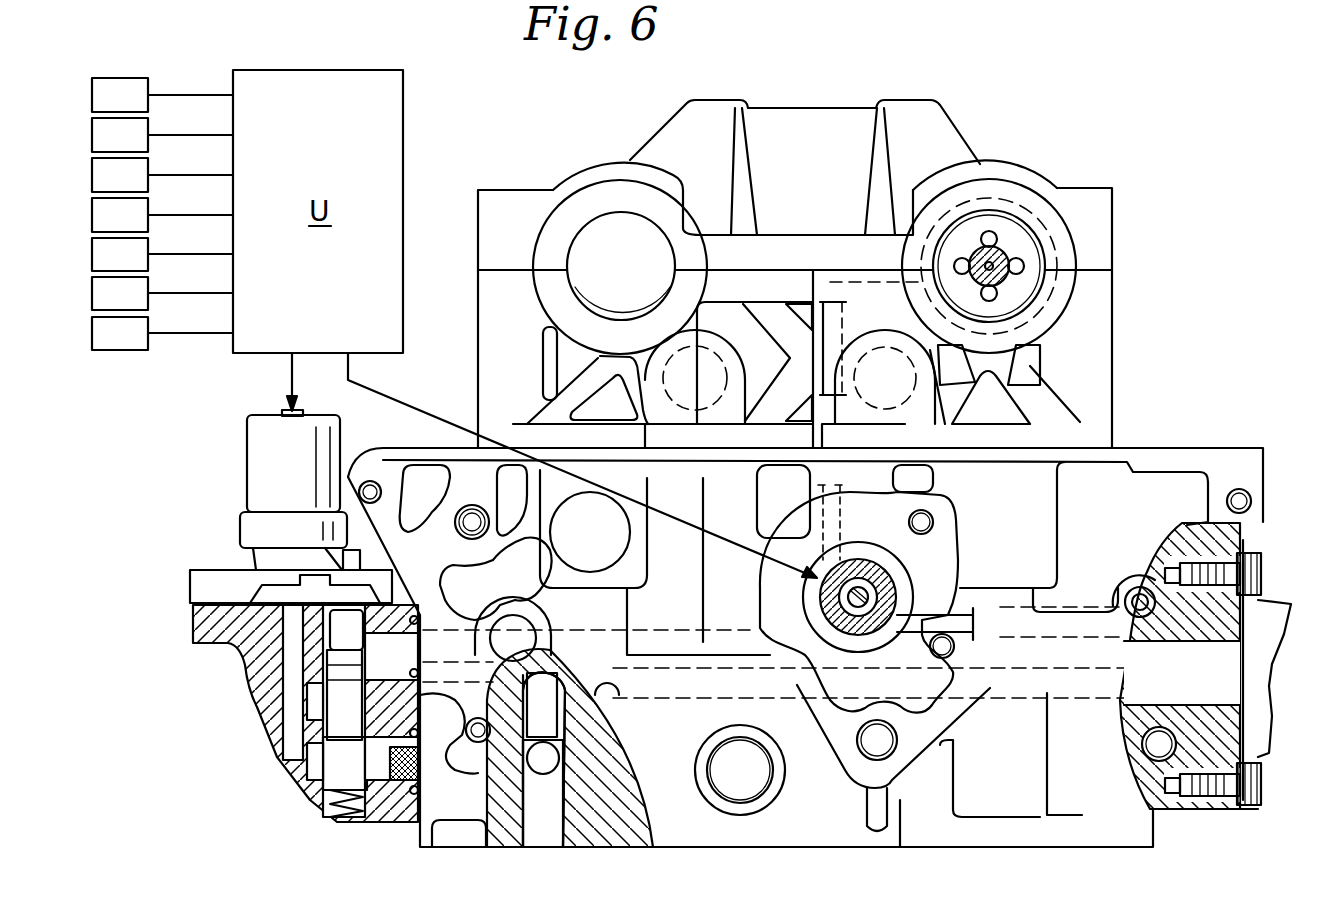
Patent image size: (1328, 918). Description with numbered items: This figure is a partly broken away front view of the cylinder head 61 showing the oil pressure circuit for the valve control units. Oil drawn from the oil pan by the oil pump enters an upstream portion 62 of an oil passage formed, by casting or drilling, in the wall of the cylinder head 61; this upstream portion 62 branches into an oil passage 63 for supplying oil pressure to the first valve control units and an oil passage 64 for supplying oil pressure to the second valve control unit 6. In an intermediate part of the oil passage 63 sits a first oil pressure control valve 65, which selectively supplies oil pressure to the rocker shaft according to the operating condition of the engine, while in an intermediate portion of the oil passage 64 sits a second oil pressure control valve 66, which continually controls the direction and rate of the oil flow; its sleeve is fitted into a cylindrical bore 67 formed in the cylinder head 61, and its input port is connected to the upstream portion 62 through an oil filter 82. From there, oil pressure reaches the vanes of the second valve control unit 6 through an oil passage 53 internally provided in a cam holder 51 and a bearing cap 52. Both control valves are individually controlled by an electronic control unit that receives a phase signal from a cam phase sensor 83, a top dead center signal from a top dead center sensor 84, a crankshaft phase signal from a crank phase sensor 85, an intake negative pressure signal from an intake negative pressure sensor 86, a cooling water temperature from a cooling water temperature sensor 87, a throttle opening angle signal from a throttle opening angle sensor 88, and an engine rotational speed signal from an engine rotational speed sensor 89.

The second valve control unit 6 is at (1040, 247).
The cam holder 51 is at (1110, 378).
The bearing cap 52 is at (1070, 190).
The oil passage 53 is at (832, 300).
The cylinder head 61 is at (1176, 448).
The upstream portion 62 is at (531, 832).
The oil passage 63 is at (418, 828).
The oil passage 64 is at (610, 692).
The first oil pressure control valve 65 is at (238, 503).
The second oil pressure control valve 66 is at (808, 606).
The cylindrical bore 67 is at (878, 600).
The oil filter 82 is at (1243, 703).
The cam phase sensor 83 is at (162, 96).
The top dead center sensor 84 is at (162, 136).
The crank phase sensor 85 is at (162, 176).
The intake negative pressure sensor 86 is at (162, 216).
The cooling water temperature sensor 87 is at (162, 255).
The throttle opening angle sensor 88 is at (162, 294).
The engine rotational speed sensor 89 is at (162, 334).